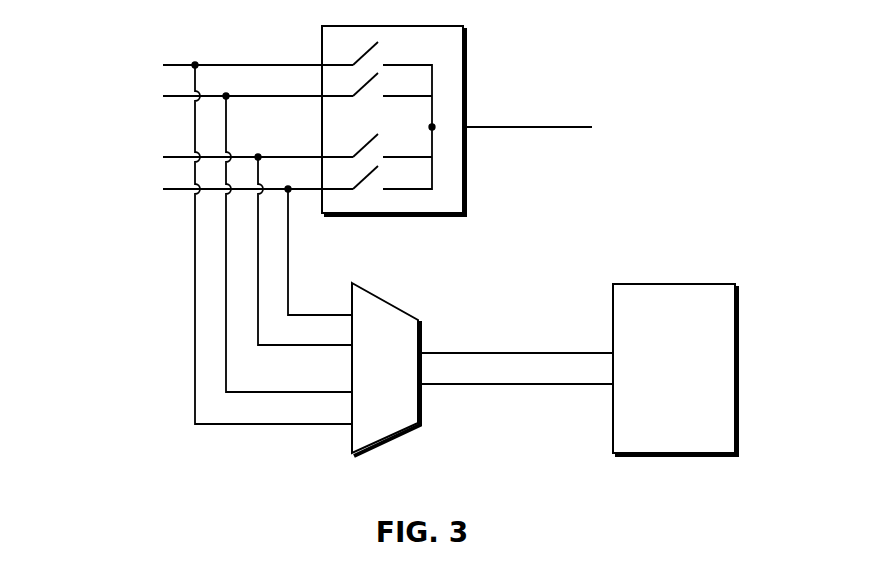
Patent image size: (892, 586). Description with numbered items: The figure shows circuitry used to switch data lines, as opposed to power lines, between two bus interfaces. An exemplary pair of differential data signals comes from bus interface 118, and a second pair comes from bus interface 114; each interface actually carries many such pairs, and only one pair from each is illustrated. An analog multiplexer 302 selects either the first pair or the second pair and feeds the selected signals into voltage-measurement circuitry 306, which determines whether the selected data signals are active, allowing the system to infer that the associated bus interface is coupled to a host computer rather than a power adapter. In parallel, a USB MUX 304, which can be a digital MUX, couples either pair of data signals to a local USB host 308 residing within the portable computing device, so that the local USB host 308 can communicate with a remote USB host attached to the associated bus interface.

The bus interface 118 is at (190, 238).
The bus interface 114 is at (192, 246).
The analog multiplexer 302 is at (398, 136).
The voltage-measurement circuitry 306 is at (600, 138).
The USB MUX 304 is at (482, 369).
The local USB host 308 is at (675, 369).